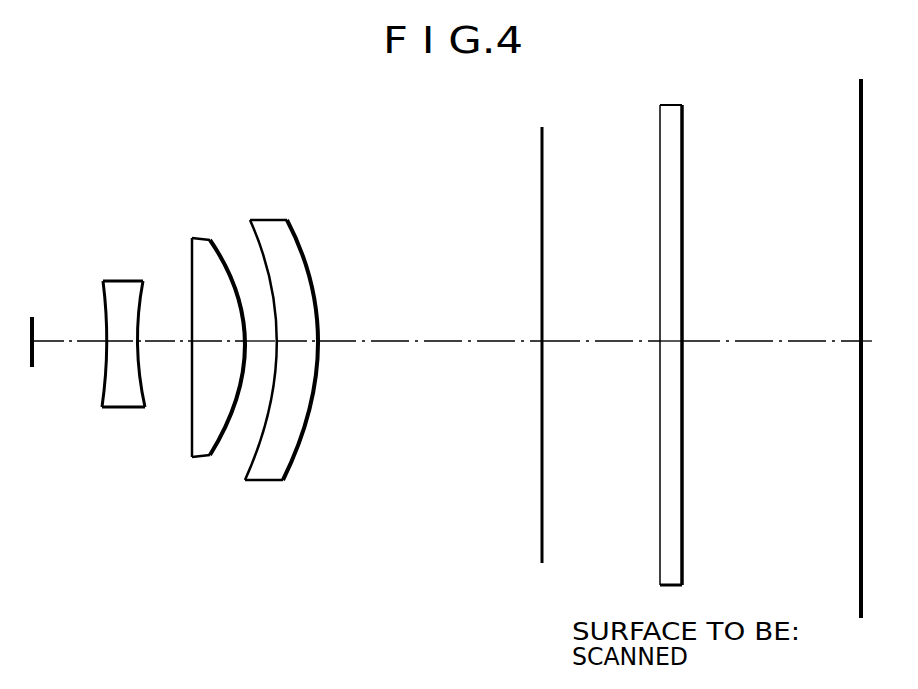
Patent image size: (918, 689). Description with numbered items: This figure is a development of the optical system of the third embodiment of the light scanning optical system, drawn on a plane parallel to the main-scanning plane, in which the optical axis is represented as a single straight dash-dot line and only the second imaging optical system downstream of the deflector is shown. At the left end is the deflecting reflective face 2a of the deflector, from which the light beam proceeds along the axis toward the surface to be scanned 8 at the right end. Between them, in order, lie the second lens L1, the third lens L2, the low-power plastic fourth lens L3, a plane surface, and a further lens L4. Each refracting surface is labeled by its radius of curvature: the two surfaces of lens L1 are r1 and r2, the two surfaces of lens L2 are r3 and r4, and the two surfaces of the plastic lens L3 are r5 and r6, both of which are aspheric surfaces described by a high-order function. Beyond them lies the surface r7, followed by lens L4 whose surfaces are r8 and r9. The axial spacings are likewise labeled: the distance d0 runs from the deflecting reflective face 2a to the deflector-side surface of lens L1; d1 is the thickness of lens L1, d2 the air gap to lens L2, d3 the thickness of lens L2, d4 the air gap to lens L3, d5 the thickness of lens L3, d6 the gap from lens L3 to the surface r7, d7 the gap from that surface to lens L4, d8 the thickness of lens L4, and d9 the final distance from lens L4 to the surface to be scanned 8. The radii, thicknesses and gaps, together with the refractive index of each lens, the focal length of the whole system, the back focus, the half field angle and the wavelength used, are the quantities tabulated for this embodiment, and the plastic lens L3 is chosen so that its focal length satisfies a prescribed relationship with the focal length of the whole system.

The deflecting reflective face 2a is at (34, 360).
The surface to be scanned 8 is at (861, 591).
The second lens L1 is at (115, 313).
The third lens L2 is at (197, 314).
The fourth lens L3 is at (302, 312).
The lens L4 is at (664, 318).
The radius of curvature of lens surface r1 is at (103, 300).
The radius of curvature of lens surface r2 is at (147, 291).
The radius of curvature of lens surface r3 is at (192, 257).
The radius of curvature of lens surface r4 is at (225, 250).
The radius of curvature of lens surface r5 is at (250, 228).
The radius of curvature of lens surface r6 is at (305, 240).
The radius of curvature of surface r7 is at (540, 155).
The radius of curvature of lens surface r8 is at (660, 150).
The radius of curvature of lens surface r9 is at (682, 158).
The distance from deflecting reflective face to lens d0 is at (76, 340).
The lens thickness d1 is at (118, 340).
The air gap d2 is at (157, 340).
The lens thickness d3 is at (219, 340).
The air gap d4 is at (262, 340).
The lens thickness d5 is at (301, 340).
The air gap d6 is at (420, 340).
The air gap d7 is at (601, 340).
The lens thickness d8 is at (676, 340).
The distance to surface to be scanned d9 is at (784, 340).